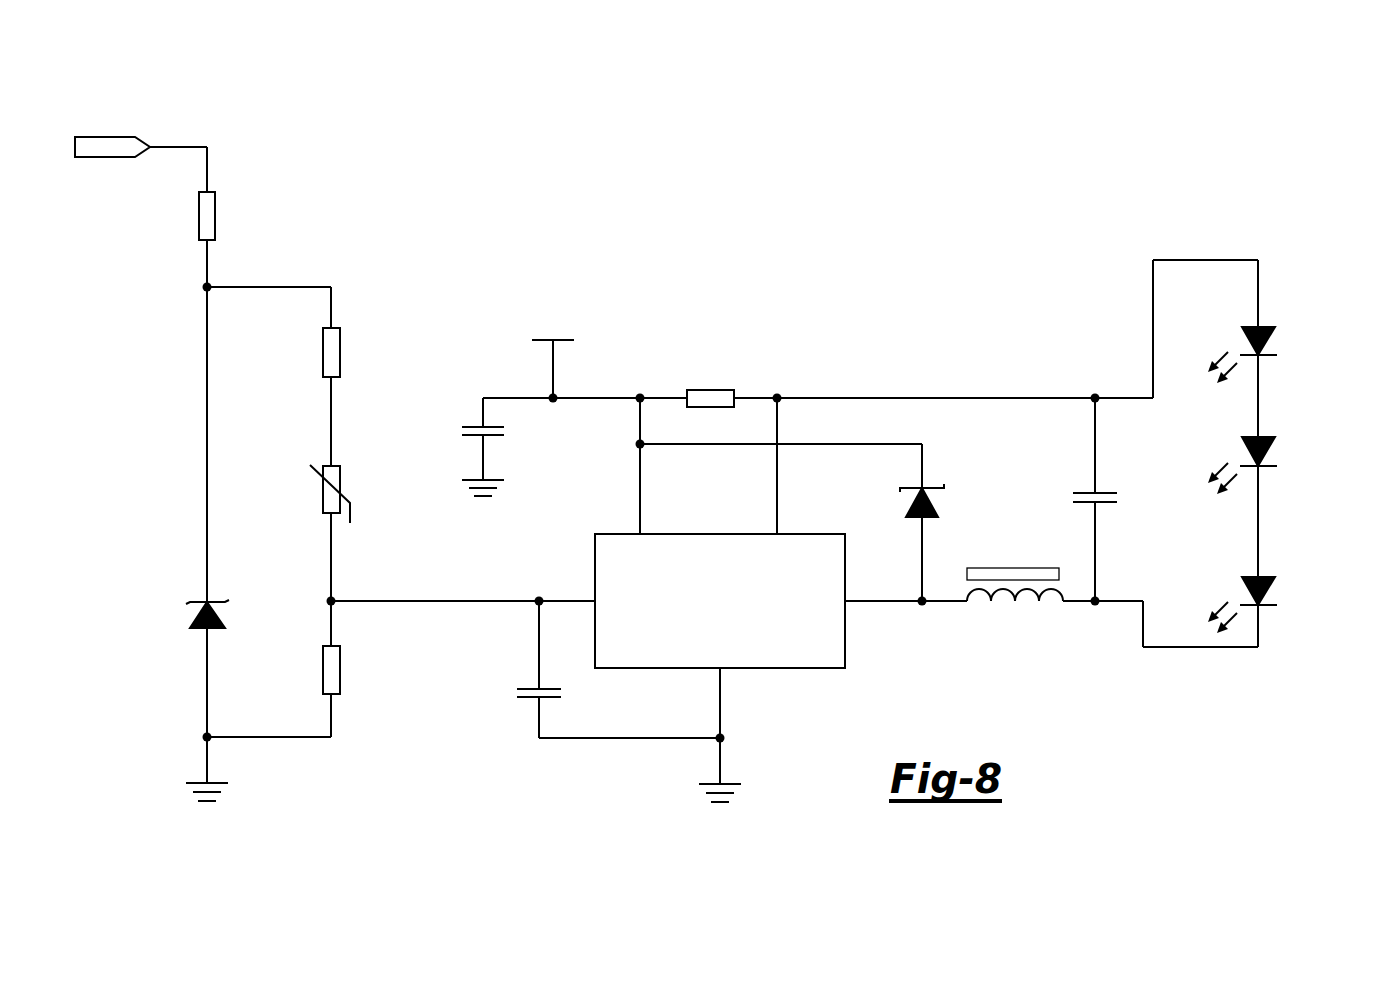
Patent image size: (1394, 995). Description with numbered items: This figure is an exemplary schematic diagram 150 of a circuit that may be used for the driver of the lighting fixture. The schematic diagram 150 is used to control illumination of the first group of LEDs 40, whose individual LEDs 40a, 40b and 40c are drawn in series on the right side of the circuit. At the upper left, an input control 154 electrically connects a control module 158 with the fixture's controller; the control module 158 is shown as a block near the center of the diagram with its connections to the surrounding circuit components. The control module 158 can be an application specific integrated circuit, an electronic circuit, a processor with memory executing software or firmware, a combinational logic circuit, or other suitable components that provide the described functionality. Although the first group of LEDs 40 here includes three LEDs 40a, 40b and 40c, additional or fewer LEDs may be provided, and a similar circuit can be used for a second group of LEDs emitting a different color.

The input control 154 is at (150, 122).
The exemplary schematic diagram 150 is at (858, 243).
The control module 158 is at (800, 690).
The first group of light emitting diodes 40 is at (1258, 453).
The light emitting diode 40a is at (1275, 338).
The light emitting diode 40b is at (1275, 449).
The light emitting diode 40c is at (1275, 591).